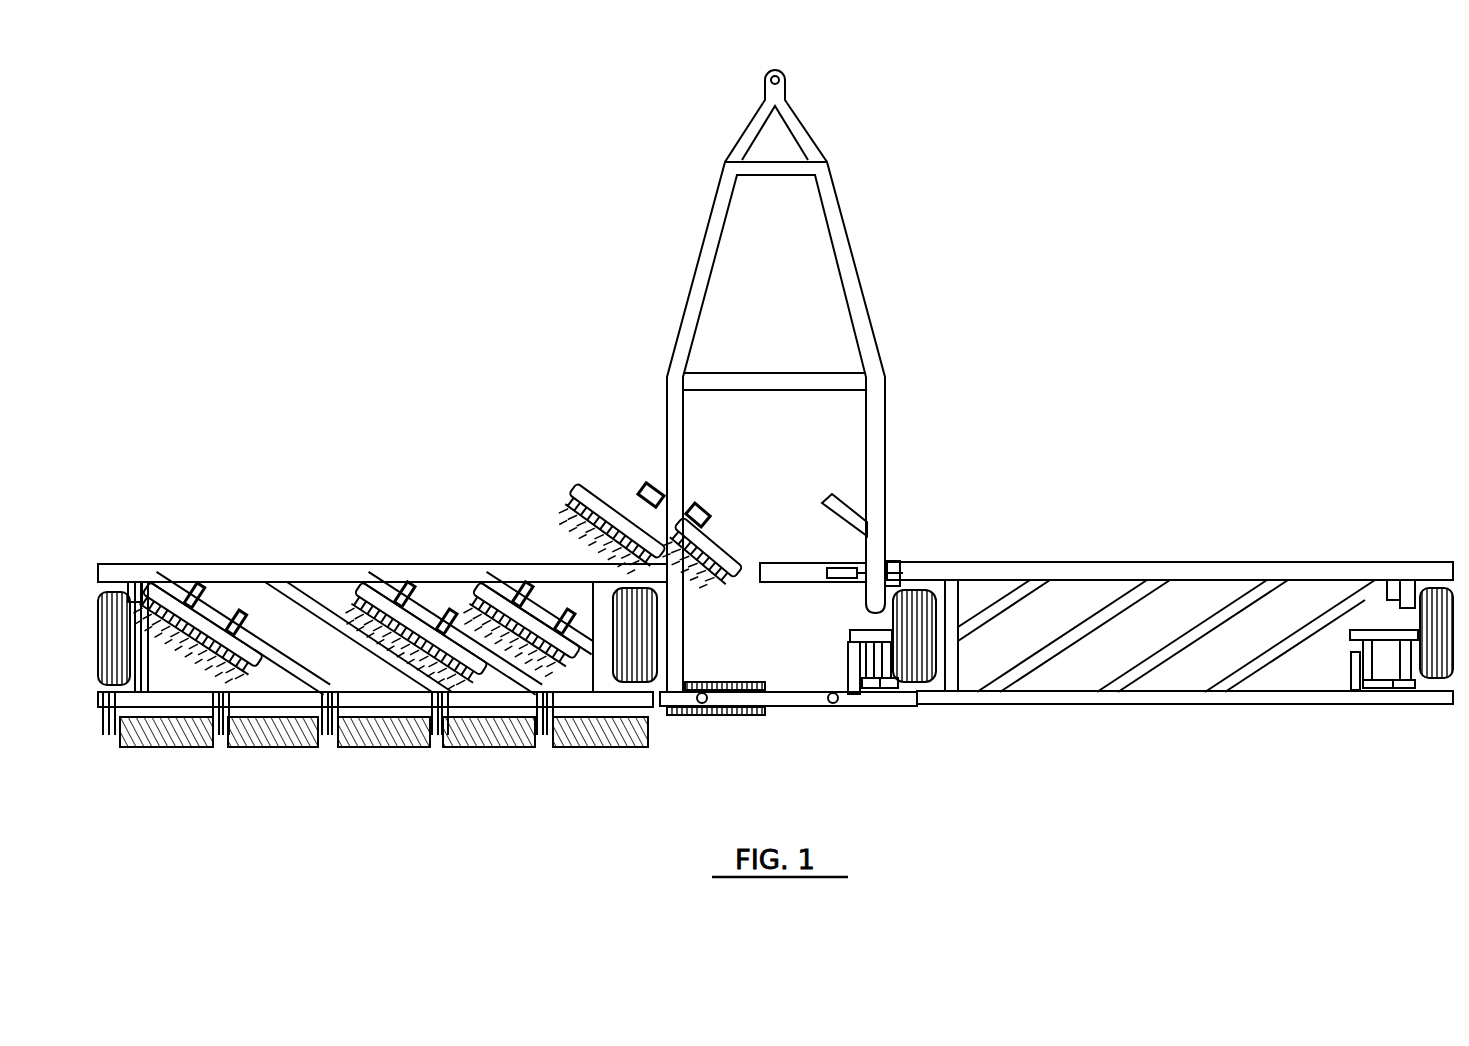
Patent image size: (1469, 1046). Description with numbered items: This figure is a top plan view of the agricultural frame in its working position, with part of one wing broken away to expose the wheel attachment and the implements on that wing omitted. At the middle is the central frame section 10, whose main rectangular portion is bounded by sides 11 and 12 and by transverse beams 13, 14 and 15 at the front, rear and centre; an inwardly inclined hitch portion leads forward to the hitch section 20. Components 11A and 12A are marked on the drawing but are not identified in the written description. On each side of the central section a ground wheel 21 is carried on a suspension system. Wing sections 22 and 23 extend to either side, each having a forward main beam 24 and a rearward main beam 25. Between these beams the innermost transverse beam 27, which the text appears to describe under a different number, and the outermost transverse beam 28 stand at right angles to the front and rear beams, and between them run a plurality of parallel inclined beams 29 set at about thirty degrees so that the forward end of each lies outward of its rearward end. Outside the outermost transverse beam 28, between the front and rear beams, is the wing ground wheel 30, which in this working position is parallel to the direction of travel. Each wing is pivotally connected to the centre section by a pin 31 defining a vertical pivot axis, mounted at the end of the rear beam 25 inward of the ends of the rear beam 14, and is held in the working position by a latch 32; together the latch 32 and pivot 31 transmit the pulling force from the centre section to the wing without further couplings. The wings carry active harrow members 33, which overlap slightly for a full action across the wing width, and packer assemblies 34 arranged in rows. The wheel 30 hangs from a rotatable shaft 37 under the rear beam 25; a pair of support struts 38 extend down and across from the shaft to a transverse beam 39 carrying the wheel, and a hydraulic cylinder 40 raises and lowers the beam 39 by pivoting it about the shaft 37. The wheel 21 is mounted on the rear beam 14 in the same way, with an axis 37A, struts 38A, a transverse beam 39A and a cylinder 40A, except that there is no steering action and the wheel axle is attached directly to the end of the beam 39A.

The central frame section 10 is at (738, 423).
The side 11 is at (667, 420).
The side 12 is at (885, 410).
The transverse beam 13 is at (775, 375).
The brush clamp 11A is at (655, 478).
The strut 12A is at (830, 500).
The transverse rear beam 14 is at (785, 710).
The transverse beam 15 is at (805, 568).
The hitch section 20 is at (742, 112).
The ground wheel 21 is at (930, 600).
The wing section 22 is at (415, 525).
The wing section 23 is at (1135, 540).
The forward main beam 24 is at (355, 578).
The rearward main beam 25 is at (300, 705).
The vertical strut 27 is at (590, 600).
The outermost transverse beam 28 is at (137, 598).
The inclined beams 29 is at (276, 600).
The ground wheel 30 is at (1435, 598).
The pin 31 is at (833, 698).
The latch 32 is at (895, 545).
The active harrow members 33 is at (575, 490).
The packer assemblies 34 is at (195, 745).
The rotatable shaft 37 is at (1405, 690).
The axis 37A is at (870, 690).
The support struts 38 is at (1380, 690).
The struts 38A is at (898, 690).
The transverse beam 39 is at (1350, 632).
The transverse beam 39A is at (875, 635).
The hydraulic cylinder 40 is at (1350, 668).
The cylinder 40A is at (855, 660).